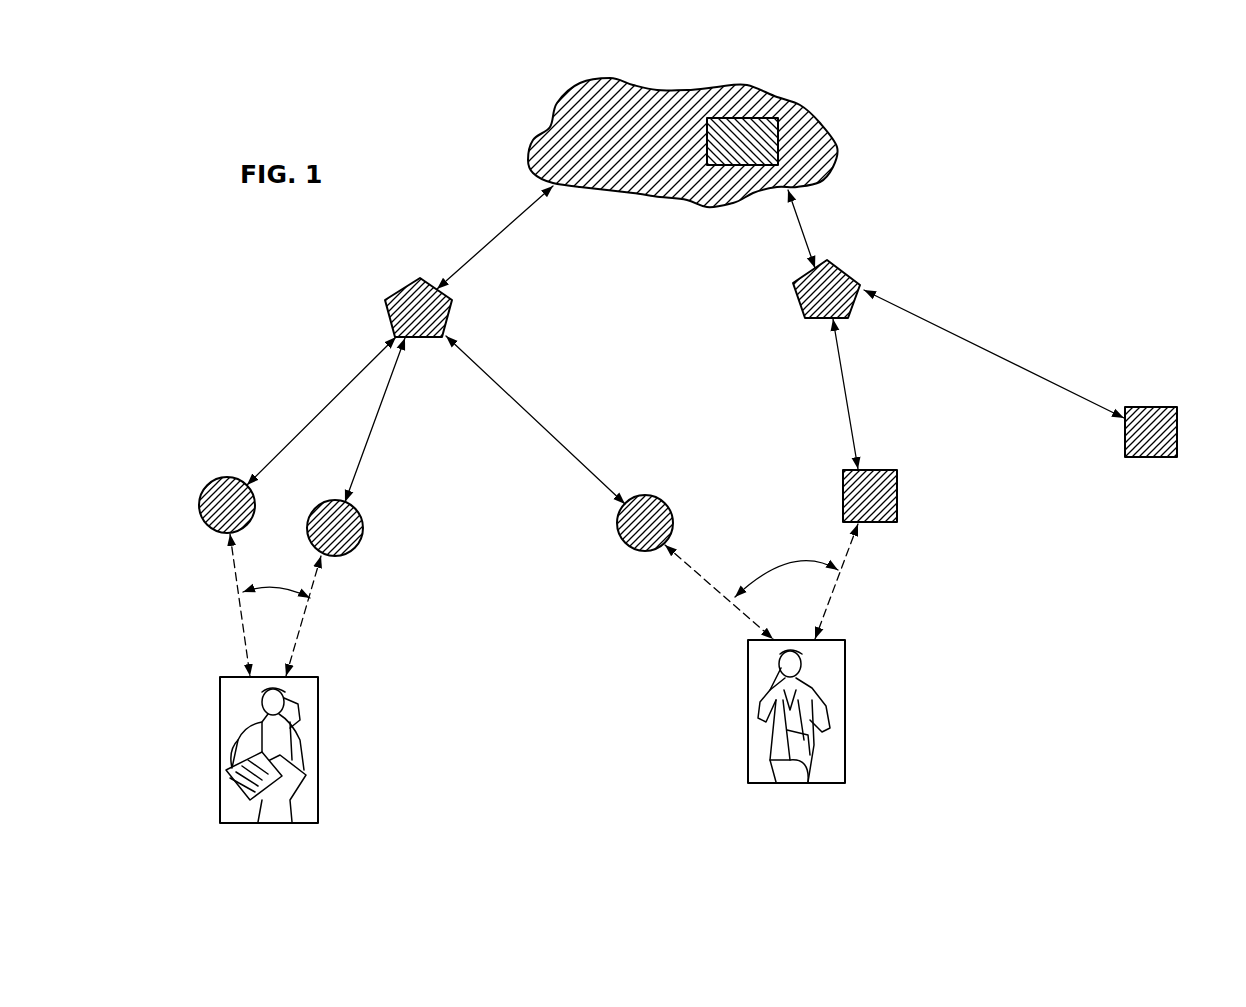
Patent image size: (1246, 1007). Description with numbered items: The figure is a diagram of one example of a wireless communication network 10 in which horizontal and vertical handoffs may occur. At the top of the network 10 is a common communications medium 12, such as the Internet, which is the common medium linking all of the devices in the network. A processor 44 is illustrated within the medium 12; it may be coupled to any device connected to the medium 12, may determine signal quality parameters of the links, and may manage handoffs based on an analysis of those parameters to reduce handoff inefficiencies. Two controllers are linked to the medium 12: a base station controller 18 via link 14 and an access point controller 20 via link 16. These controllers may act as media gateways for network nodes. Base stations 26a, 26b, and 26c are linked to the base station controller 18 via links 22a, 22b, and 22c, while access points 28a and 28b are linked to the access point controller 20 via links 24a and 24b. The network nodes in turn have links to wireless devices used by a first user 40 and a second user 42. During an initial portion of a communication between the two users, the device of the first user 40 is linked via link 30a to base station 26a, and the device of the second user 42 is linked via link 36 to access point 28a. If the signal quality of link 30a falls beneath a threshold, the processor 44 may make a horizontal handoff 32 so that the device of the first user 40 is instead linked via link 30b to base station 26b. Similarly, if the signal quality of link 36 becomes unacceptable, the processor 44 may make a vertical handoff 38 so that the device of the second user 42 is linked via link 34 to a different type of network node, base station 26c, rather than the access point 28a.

The wireless communication network 10 is at (962, 176).
The common communications medium 12 is at (545, 125).
The link 14 is at (505, 229).
The link 16 is at (800, 225).
The base station controller 18 is at (402, 288).
The access point controller 20 is at (845, 268).
The link 22a is at (312, 419).
The link 22b is at (380, 405).
The link 22c is at (532, 410).
The link 24a is at (851, 393).
The link 24b is at (1000, 356).
The base station 26a is at (200, 505).
The base station 26b is at (362, 527).
The base station 26c is at (652, 497).
The access point 28a is at (898, 505).
The access point 28b is at (1150, 458).
The link 30a is at (242, 621).
The link 30b is at (303, 621).
The horizontal handoff 32 is at (268, 590).
The link 34 is at (710, 583).
The link 36 is at (847, 557).
The vertical handoff 38 is at (783, 565).
The first user 40 is at (320, 770).
The second user 42 is at (748, 733).
The processor 44 is at (748, 117).